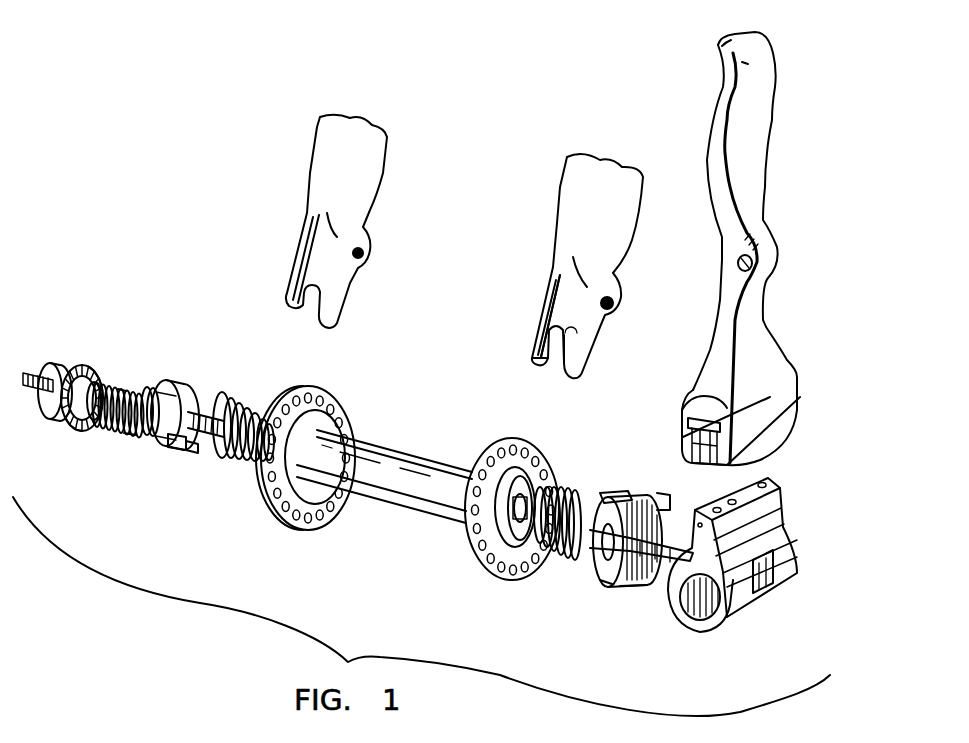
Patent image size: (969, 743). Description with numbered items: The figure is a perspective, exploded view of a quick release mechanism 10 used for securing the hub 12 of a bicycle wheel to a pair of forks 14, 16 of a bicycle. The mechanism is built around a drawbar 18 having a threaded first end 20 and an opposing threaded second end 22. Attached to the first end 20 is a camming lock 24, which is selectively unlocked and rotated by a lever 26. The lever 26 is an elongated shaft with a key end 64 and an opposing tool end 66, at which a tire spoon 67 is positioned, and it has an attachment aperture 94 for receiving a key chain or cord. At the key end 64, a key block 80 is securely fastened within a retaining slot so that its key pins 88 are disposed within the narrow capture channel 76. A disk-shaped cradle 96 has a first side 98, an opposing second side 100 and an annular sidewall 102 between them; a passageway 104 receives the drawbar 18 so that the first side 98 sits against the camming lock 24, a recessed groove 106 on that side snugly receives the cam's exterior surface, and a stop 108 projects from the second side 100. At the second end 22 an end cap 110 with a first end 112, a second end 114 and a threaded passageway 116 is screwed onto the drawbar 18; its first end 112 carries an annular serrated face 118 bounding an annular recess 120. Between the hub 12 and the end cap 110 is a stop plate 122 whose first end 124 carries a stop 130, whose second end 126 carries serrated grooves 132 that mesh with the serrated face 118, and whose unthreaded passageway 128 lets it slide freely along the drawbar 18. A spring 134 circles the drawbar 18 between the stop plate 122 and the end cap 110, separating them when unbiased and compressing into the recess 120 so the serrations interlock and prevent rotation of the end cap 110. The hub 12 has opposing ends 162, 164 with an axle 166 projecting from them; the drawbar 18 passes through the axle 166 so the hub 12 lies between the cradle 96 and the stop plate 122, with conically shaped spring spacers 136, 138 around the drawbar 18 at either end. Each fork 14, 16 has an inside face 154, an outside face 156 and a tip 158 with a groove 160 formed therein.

The quick release mechanism 10 is at (637, 632).
The hub 12 is at (397, 462).
The fork 14 is at (340, 247).
The fork 16 is at (600, 283).
The drawbar 18 is at (208, 412).
The threaded first end 20 is at (658, 565).
The threaded second end 22 is at (33, 388).
The camming lock 24 is at (790, 557).
The lever 26 is at (753, 200).
The key end 64 is at (770, 423).
The tool end 66 is at (748, 55).
The tire spoon 67 is at (753, 88).
The capture channel 76 is at (740, 463).
The key block 80 is at (770, 397).
The key pins 88 is at (690, 436).
The attachment aperture 94 is at (750, 270).
The cradle 96 is at (603, 492).
The first side 98 is at (657, 515).
The second side 100 is at (597, 492).
The annular sidewall 102 is at (600, 580).
The passageway 104 is at (615, 503).
The recessed groove 106 is at (627, 587).
The stop 108 is at (580, 560).
The end cap 110 is at (67, 376).
The first end 112 is at (97, 380).
The second end 114 is at (55, 378).
The threaded passageway 116 is at (90, 424).
The serrated face 118 is at (76, 424).
The annular recess 120 is at (100, 385).
The stop plate 122 is at (147, 438).
The first end 124 is at (182, 396).
The second end 126 is at (158, 386).
The passageway 128 is at (133, 434).
The stop 130 is at (198, 448).
The serrated grooves 132 is at (127, 436).
The spring 134 is at (122, 430).
The spacer 136 is at (240, 470).
The spacer 138 is at (493, 588).
The inside face 154 is at (337, 273).
The outside face 156 is at (563, 277).
The tip 158 is at (540, 363).
The groove 160 is at (566, 343).
The end 162 is at (300, 528).
The end 164 is at (478, 566).
The axle 166 is at (520, 478).